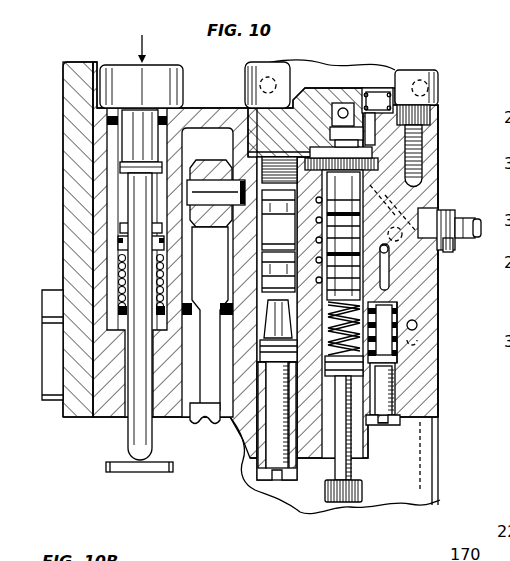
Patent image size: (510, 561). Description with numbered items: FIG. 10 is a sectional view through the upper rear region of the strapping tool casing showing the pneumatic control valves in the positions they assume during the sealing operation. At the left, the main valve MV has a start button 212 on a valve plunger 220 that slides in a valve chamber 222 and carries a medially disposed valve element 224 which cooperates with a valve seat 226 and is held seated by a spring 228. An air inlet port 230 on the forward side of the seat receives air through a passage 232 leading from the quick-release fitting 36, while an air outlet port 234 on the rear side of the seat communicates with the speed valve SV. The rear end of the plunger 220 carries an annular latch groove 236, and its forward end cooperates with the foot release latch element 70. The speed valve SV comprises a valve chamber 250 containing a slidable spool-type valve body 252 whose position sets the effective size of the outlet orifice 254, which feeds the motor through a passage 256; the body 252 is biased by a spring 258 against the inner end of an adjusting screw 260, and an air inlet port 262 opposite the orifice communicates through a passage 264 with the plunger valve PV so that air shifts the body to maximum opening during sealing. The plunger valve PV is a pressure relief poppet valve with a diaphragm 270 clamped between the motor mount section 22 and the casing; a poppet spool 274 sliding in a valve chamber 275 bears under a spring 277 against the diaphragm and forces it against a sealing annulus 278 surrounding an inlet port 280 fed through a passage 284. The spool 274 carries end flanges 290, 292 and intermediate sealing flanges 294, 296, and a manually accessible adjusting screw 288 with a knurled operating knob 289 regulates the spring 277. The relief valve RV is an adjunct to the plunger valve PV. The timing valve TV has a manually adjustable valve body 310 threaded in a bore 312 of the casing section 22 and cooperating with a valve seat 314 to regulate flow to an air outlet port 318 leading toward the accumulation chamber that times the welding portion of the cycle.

The start button 212 is at (125, 72).
The main valve MV is at (188, 78).
The speed valve SV is at (284, 125).
The plunger valve PV is at (350, 82).
The relief valve RV is at (394, 78).
The timing valve TV is at (416, 398).
The valve plunger 220 is at (133, 140).
The valve chamber 222 is at (123, 165).
The air inlet port 230 is at (112, 190).
The valve seat 226 is at (117, 204).
The valve element 224 is at (122, 228).
The air outlet port 234 is at (110, 267).
The spring 228 is at (120, 280).
The annular latch groove 236 is at (150, 385).
The foot release latch element 70 is at (135, 468).
The spring 258 is at (247, 168).
The passage 256 is at (247, 87).
The diaphragm 270 is at (275, 110).
The sealing annulus 278 is at (330, 112).
The inlet port 280 is at (360, 86).
The passage 284 is at (445, 78).
The intermediate motor mount section 22 is at (442, 137).
The end flange 290 is at (442, 160).
The passage 232 is at (443, 192).
The quick-release fitting 36 is at (452, 210).
The intermediate sealing flange 294 is at (358, 184).
The intermediate sealing flange 296 is at (390, 248).
The valve body 252 is at (279, 203).
The outlet orifice 254 is at (270, 272).
The valve chamber 250 is at (272, 322).
The passage 264 is at (279, 352).
The air inlet port 262 is at (266, 412).
The poppet spool 274 is at (343, 236).
The valve chamber 275 is at (362, 277).
The spring 277 is at (304, 388).
The adjusting screw 288 is at (348, 467).
The knurled operating knob 289 is at (362, 503).
The end flange 292 is at (382, 300).
The valve seat 314 is at (410, 300).
The air outlet port 318 is at (418, 323).
The valve body 310 is at (415, 378).
The bore 312 is at (396, 424).
The adjusting screw 260 is at (258, 492).